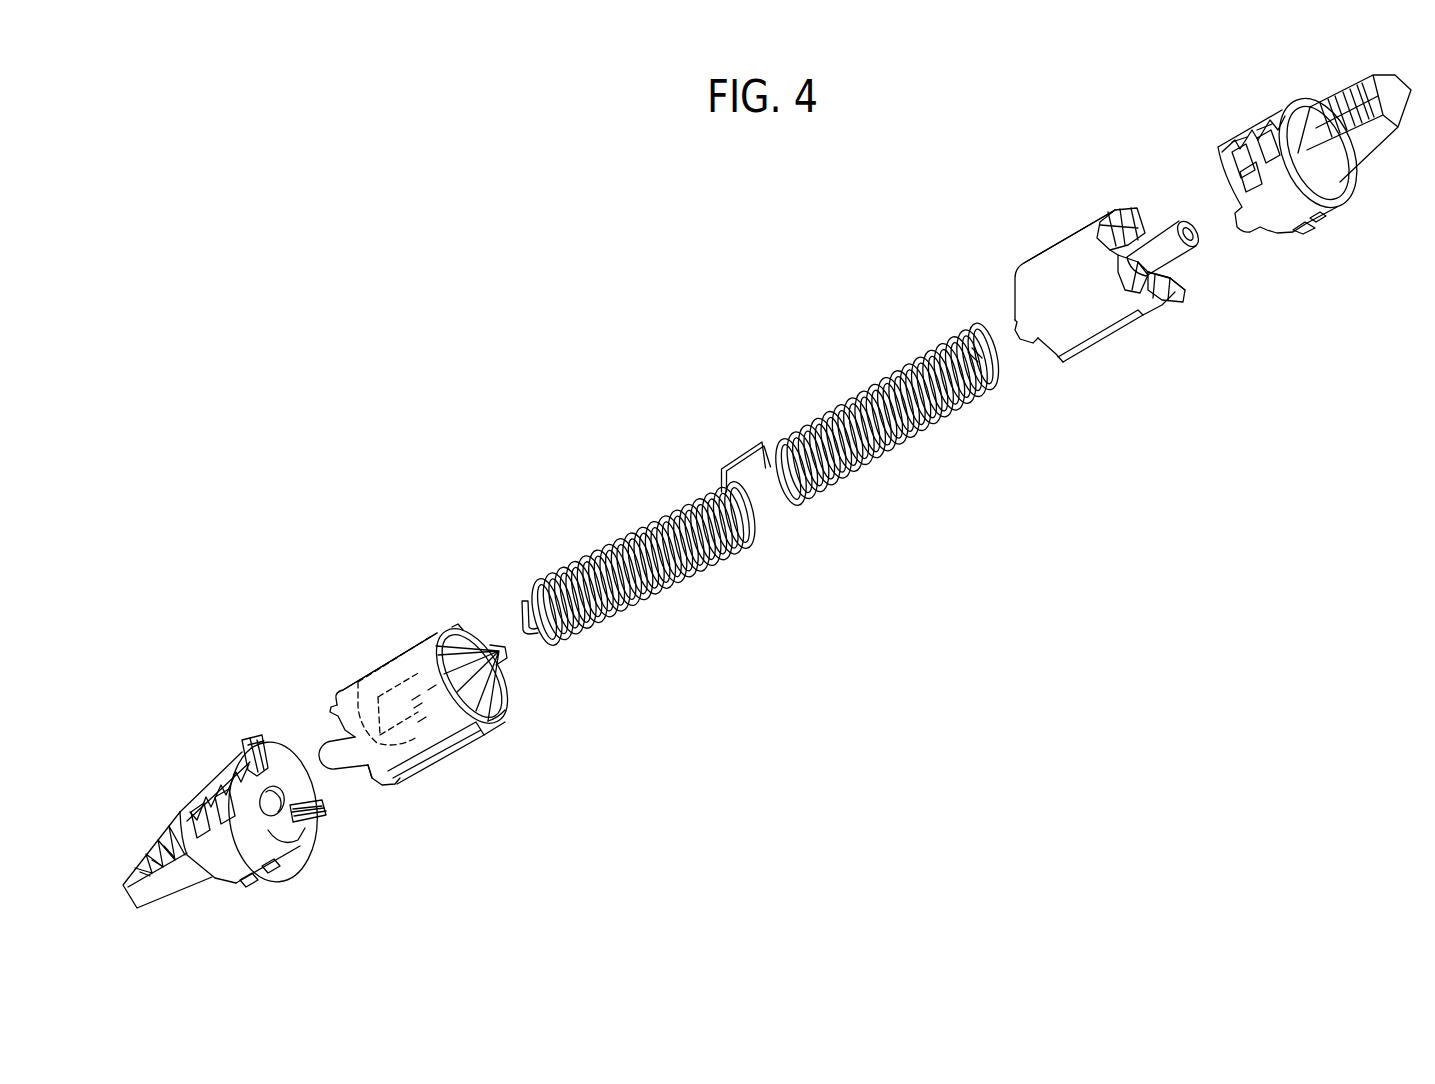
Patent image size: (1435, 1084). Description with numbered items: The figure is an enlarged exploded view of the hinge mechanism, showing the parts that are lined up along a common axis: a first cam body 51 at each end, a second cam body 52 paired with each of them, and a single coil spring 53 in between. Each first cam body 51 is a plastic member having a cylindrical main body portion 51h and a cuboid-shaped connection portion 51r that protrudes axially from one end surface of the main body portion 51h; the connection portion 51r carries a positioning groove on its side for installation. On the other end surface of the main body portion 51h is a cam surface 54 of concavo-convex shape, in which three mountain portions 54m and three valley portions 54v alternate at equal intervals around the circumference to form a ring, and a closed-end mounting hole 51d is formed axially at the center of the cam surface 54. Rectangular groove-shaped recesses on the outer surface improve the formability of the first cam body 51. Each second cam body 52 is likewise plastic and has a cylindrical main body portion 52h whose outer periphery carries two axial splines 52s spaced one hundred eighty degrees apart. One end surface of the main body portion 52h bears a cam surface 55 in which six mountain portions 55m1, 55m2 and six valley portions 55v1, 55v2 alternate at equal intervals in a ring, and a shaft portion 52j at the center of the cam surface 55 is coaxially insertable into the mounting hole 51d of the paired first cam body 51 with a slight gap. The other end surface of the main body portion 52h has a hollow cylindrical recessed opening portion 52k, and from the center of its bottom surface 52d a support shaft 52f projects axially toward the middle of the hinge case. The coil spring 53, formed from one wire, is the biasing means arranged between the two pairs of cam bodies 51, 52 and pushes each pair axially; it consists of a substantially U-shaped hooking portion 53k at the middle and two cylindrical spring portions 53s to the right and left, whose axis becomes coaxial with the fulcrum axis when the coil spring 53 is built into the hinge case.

The first cam body 51 is at (197, 777).
The connection portion 51r is at (153, 833).
The main body portion 51h is at (262, 880).
The mounting hole 51d is at (300, 832).
The second cam body 52 is at (413, 633).
The main body portion 52h is at (390, 653).
The shaft portion 52j is at (338, 737).
The spline 52s is at (460, 625).
The support shaft 52f is at (508, 656).
The recessed opening portion 52k is at (505, 720).
The bottom surface 52d is at (433, 777).
The coil spring 53 is at (673, 510).
The spring portion 53s is at (617, 543).
The hooking portion 53k is at (742, 446).
The cam surface 54 is at (310, 682).
The mountain portion 54m is at (262, 745).
The valley portion 54v is at (283, 777).
The cam surface 55 is at (360, 780).
The valley portion 55v1 is at (1125, 240).
The valley portion 55v2 is at (1140, 290).
The mountain portion 55m1 is at (1153, 283).
The mountain portion 55m2 is at (1177, 263).